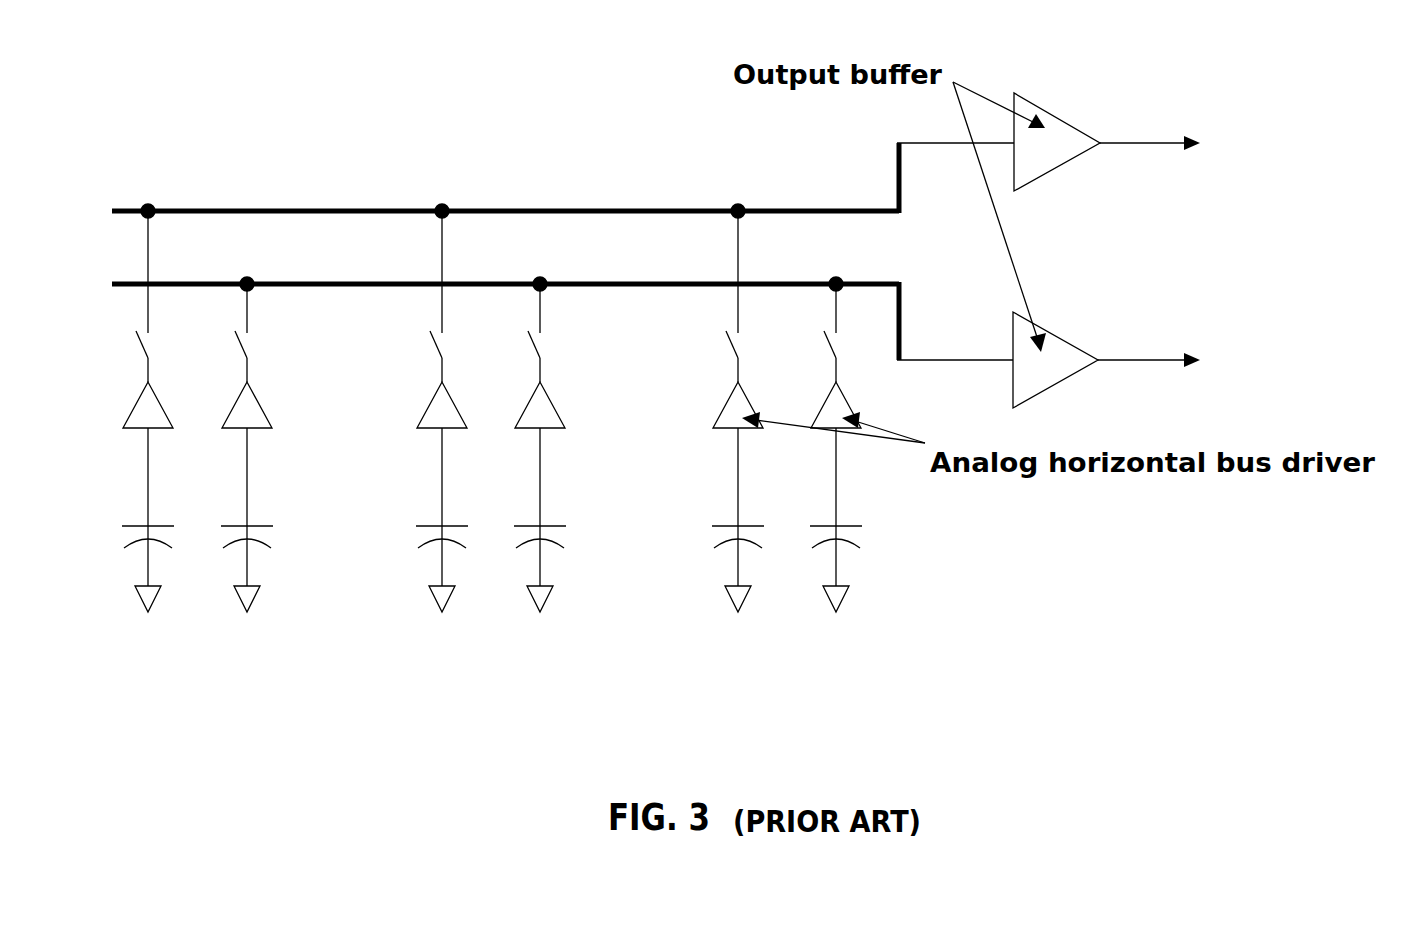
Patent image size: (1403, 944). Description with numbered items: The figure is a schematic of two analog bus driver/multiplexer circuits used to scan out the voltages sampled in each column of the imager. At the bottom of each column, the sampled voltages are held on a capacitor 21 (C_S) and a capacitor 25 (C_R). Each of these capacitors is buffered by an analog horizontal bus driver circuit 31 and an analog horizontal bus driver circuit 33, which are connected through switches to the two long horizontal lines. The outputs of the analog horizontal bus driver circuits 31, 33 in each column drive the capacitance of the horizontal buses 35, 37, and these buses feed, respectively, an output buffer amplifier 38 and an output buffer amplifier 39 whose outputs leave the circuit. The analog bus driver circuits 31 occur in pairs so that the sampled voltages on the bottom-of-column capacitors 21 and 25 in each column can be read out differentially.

The capacitor C_S 21 is at (268, 537).
The capacitor C_R 25 is at (121, 538).
The analog horizontal bus driver circuit 31 is at (303, 206).
The analog horizontal bus driver circuit 33 is at (323, 298).
The horizontal bus 35 is at (683, 210).
The horizontal bus 37 is at (628, 286).
The output buffer amplifier 38 is at (1056, 112).
The output buffer amplifier 39 is at (1057, 332).